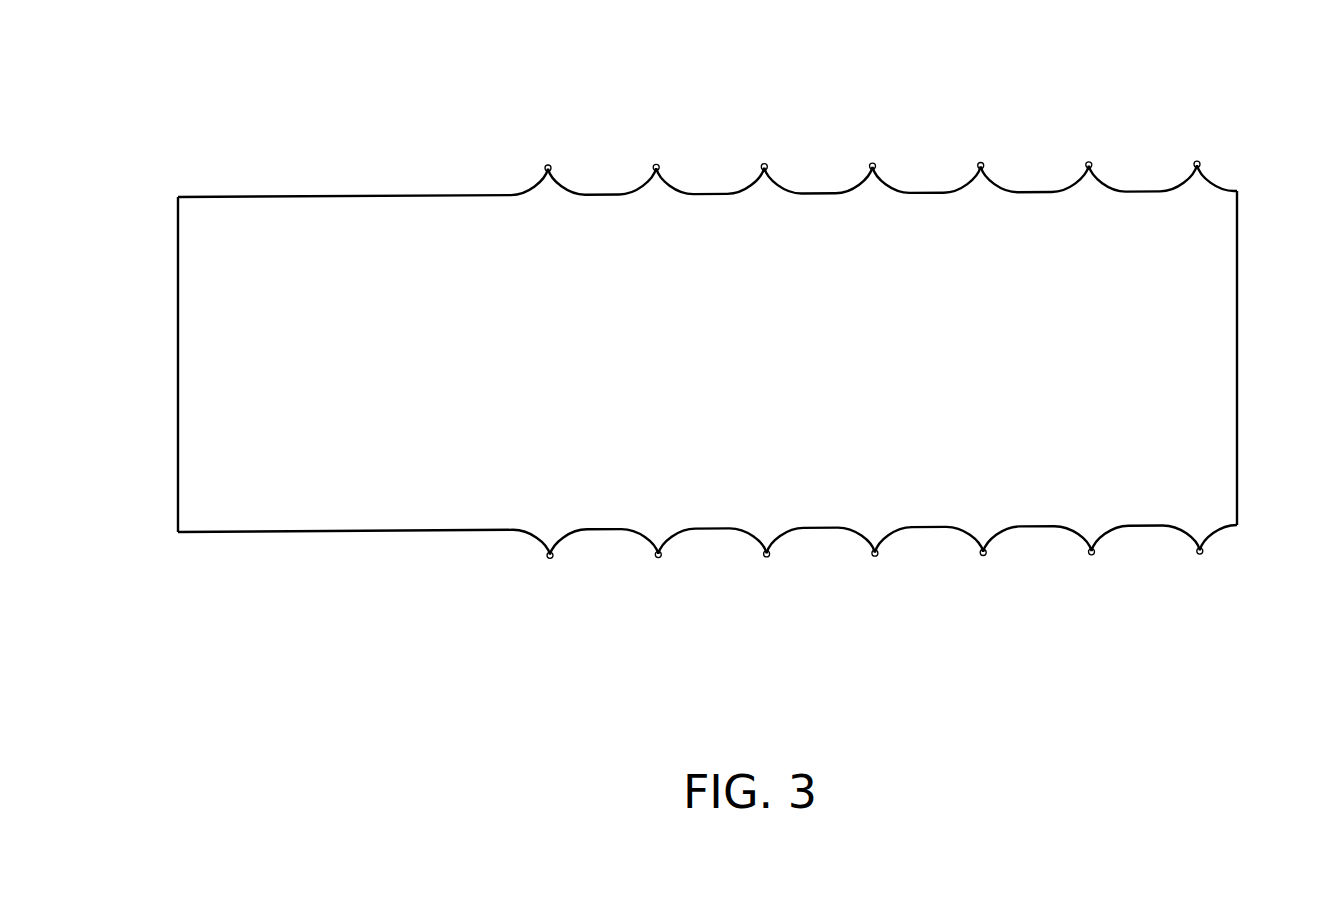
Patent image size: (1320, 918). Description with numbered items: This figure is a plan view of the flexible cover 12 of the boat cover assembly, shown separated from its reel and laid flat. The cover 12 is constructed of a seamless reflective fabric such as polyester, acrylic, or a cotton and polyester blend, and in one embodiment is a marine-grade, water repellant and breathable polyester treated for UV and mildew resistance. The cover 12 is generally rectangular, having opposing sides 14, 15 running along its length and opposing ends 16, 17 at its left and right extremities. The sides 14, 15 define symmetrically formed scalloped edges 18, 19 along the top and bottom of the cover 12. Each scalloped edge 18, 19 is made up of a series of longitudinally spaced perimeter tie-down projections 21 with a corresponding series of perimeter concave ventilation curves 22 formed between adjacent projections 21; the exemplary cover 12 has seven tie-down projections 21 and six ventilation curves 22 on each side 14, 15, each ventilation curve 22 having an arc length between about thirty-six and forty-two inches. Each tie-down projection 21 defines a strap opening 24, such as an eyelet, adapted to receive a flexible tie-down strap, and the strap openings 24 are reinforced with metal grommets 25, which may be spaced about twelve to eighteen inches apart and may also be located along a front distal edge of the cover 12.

The flexible cover 12 is at (702, 357).
The side 14 is at (443, 197).
The side 15 is at (337, 532).
The end 16 is at (178, 270).
The end 17 is at (1237, 265).
The scalloped edge 18 is at (793, 118).
The scalloped edge 19 is at (846, 583).
The tie-down projection 21 is at (546, 165).
The ventilation curve 22 is at (605, 194).
The strap opening 24 is at (762, 164).
The metal grommet 25 is at (978, 164).